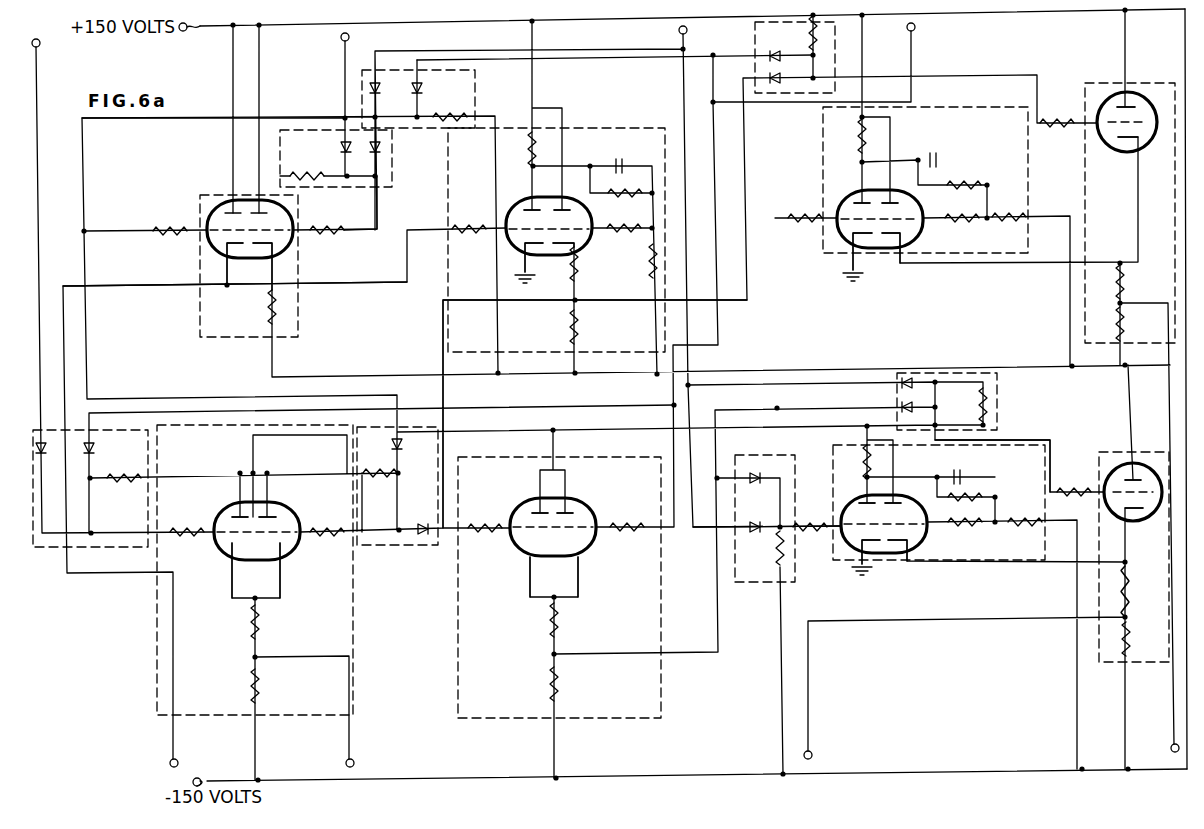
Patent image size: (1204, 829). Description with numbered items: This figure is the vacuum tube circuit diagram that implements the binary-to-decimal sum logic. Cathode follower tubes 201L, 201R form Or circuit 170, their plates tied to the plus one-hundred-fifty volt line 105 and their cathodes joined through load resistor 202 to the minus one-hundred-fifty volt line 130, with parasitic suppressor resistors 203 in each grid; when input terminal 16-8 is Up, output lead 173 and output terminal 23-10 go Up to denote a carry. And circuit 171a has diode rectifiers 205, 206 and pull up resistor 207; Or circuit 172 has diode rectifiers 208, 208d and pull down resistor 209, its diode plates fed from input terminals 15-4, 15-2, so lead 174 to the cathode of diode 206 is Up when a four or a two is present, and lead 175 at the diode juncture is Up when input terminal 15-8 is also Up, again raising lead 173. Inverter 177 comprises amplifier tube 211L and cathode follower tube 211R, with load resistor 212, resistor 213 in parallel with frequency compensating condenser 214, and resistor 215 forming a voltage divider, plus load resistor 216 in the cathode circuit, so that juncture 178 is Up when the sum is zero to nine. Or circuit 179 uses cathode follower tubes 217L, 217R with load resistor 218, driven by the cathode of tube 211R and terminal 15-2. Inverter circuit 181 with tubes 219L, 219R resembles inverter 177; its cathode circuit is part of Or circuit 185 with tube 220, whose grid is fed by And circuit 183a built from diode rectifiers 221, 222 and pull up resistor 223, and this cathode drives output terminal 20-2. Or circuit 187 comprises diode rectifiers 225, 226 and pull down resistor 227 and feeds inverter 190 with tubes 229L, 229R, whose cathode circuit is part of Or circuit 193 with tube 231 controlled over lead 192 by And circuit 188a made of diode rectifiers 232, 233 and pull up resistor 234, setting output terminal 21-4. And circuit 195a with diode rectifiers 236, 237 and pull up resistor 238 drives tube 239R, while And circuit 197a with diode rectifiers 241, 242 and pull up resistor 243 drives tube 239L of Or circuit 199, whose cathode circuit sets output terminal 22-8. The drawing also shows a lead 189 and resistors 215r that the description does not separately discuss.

The +150 volt line 105 is at (687, 35).
The −150 volt line 130 is at (310, 780).
The input terminal 16-8 is at (39, 47).
The input terminal 15-8 is at (341, 37).
The input terminal 15-4 is at (679, 30).
The input terminal 15-2 is at (915, 27).
The output terminal 23-10 is at (177, 759).
The output terminal 22-8 is at (353, 759).
The output terminal 21-4 is at (812, 755).
The output terminal 20-2 is at (1172, 744).
The Or circuit 170 is at (220, 192).
The cathode follower tube 201L is at (207, 248).
The cathode follower tube 201R is at (292, 250).
The load resistor 202 is at (270, 308).
The parasitic suppressor resistor 203 is at (185, 224).
The output lead 173 is at (353, 283).
The lead 174 is at (362, 116).
The lead 175 is at (350, 232).
The And circuit 171a is at (395, 187).
The diode rectifier 205 is at (341, 148).
The diode rectifier 206 is at (382, 152).
The pull up resistor 207 is at (318, 175).
The Or circuit 172 is at (480, 86).
The diode rectifier 208 is at (425, 89).
The diode rectifier 208d is at (395, 96).
The pull down resistor 209 is at (440, 121).
The inverter 177 is at (661, 128).
The amplifier tube 211L is at (505, 250).
The cathode follower tube 211R is at (593, 238).
The load resistor 212 is at (532, 152).
The resistor 213 is at (632, 192).
The frequency compensating condenser 214 is at (619, 165).
The cathode resistor 215r is at (579, 265).
The resistor 215 is at (654, 265).
The load resistor 216 is at (579, 320).
The juncture 178 is at (574, 300).
The load resistor 218 is at (558, 683).
The And circuit 183a is at (836, 47).
The diode rectifier 222 is at (760, 52).
The diode rectifier 221 is at (775, 86).
The pull up resistor 223 is at (808, 40).
The inverter circuit 181 is at (823, 163).
The tube 219L is at (810, 238).
The tube 219R is at (923, 236).
The Or circuit 185 is at (1107, 83).
The tube 220 is at (1128, 95).
The And circuit 188a is at (999, 410).
The diode rectifier 232 is at (910, 380).
The diode rectifier 233 is at (903, 400).
The pull up resistor 234 is at (998, 394).
The lead 192 is at (1050, 445).
The Or circuit 193 is at (1108, 662).
The tube 231 is at (1158, 515).
The inverter 190 is at (840, 468).
The tube 229L is at (825, 555).
The tube 229R is at (921, 538).
The conductor 189 is at (793, 520).
The Or circuit 187 is at (770, 582).
The diode rectifier 226 is at (758, 489).
The diode rectifier 225 is at (758, 539).
The pull down resistor 227 is at (778, 560).
The Or circuit 179 is at (662, 667).
The cathode follower tube 217L is at (512, 560).
The cathode follower tube 217R is at (588, 555).
The Or circuit 199 is at (353, 655).
The tube 239L is at (222, 550).
The tube 239R is at (287, 552).
The And circuit 195a is at (385, 545).
The diode rectifier 236 is at (423, 528).
The diode rectifier 237 is at (392, 446).
The pull up resistor 238 is at (381, 485).
The And circuit 197a is at (128, 428).
The diode rectifier 241 is at (46, 442).
The diode rectifier 242 is at (95, 448).
The pull up resistor 243 is at (120, 482).